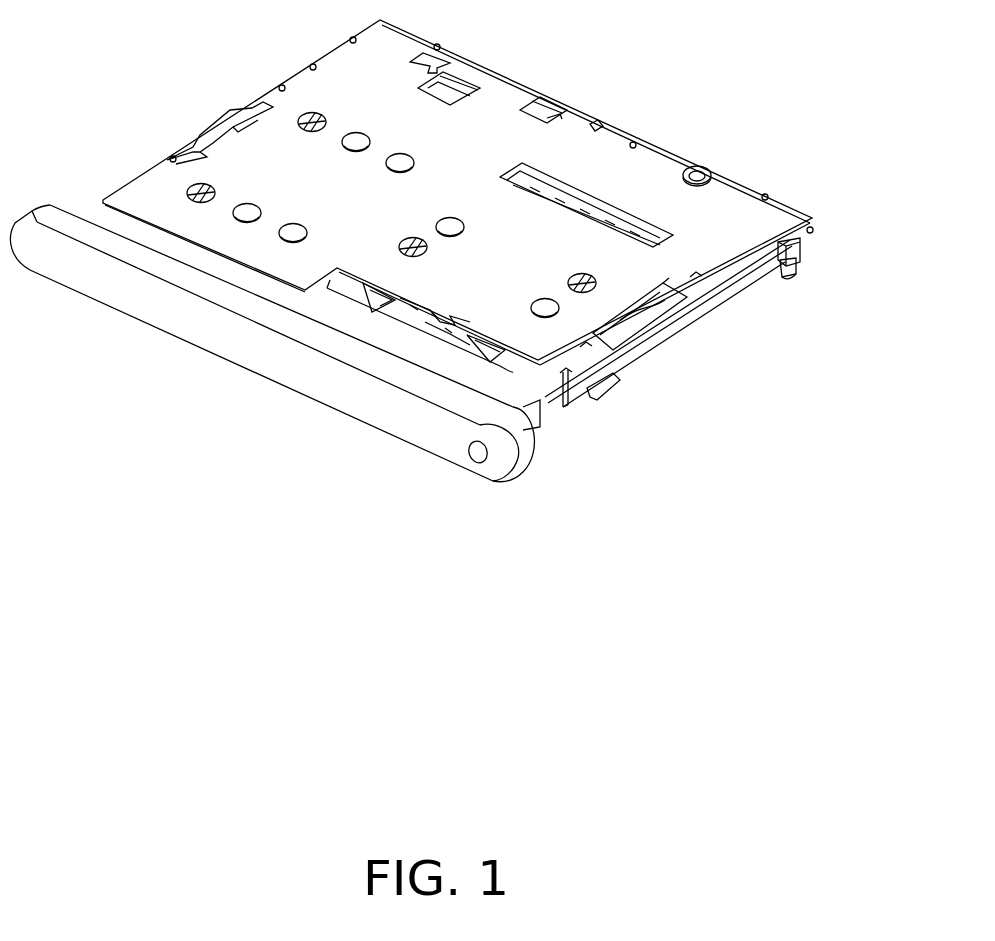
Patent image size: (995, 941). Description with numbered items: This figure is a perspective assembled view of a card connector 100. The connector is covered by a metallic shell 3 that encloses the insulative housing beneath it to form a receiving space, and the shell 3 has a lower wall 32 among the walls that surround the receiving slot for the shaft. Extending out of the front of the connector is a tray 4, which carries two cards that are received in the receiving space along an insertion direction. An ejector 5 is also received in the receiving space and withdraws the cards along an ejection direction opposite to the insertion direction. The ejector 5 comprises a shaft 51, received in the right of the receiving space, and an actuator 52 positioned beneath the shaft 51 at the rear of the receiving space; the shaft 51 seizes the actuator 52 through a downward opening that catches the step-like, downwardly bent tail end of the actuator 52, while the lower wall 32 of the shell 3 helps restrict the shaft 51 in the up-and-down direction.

The card connector 100 is at (192, 102).
The metallic shell 3 is at (657, 157).
The tray 4 is at (387, 413).
The lower wall 32 is at (573, 400).
The ejector 5 is at (860, 292).
The shaft 51 is at (795, 245).
The actuator 52 is at (787, 263).